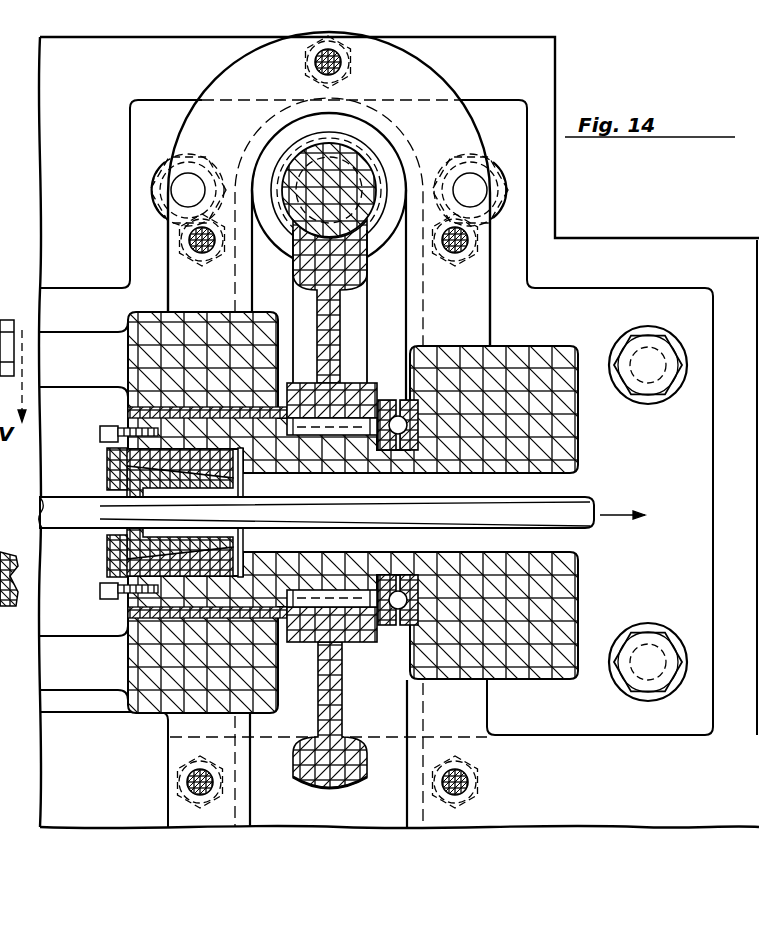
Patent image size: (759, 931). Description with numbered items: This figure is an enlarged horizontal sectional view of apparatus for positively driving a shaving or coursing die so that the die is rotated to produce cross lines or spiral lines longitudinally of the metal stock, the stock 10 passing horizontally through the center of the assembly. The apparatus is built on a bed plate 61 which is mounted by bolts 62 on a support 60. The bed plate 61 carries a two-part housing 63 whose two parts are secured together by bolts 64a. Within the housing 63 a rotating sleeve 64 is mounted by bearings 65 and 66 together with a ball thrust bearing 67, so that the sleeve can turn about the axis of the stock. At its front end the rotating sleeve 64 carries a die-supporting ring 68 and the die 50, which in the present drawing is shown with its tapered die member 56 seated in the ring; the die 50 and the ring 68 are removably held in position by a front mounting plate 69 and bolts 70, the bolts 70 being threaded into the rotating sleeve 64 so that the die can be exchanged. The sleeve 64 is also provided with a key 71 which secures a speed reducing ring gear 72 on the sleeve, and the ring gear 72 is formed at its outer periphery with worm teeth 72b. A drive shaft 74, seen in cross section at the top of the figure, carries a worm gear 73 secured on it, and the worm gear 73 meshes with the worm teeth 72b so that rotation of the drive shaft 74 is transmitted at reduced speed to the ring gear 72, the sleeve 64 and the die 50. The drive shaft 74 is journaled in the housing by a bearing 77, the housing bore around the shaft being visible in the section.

The shaft 10 is at (52, 497).
The die 50 is at (110, 538).
The tapered collet sleeve 56 is at (112, 502).
The support 60 is at (42, 148).
The bed plate 61 is at (128, 212).
The bolts 62 is at (163, 183).
The two-part housing 63 is at (212, 82).
The rotating sleeve 64 is at (560, 465).
The bolts 64a is at (314, 70).
The bearing 65 is at (560, 580).
The bearing 66 is at (140, 612).
The ball thrust bearing 67 is at (391, 400).
The die-supporting ring 68 is at (113, 435).
The front mounting plate 69 is at (108, 576).
The bolts 70 is at (100, 598).
The key 71 is at (331, 432).
The ring gear 72 is at (333, 754).
The worm teeth 72b is at (306, 242).
The worm gear 73 is at (285, 163).
The drive shaft 74 is at (343, 166).
The bearing 77 is at (362, 176).